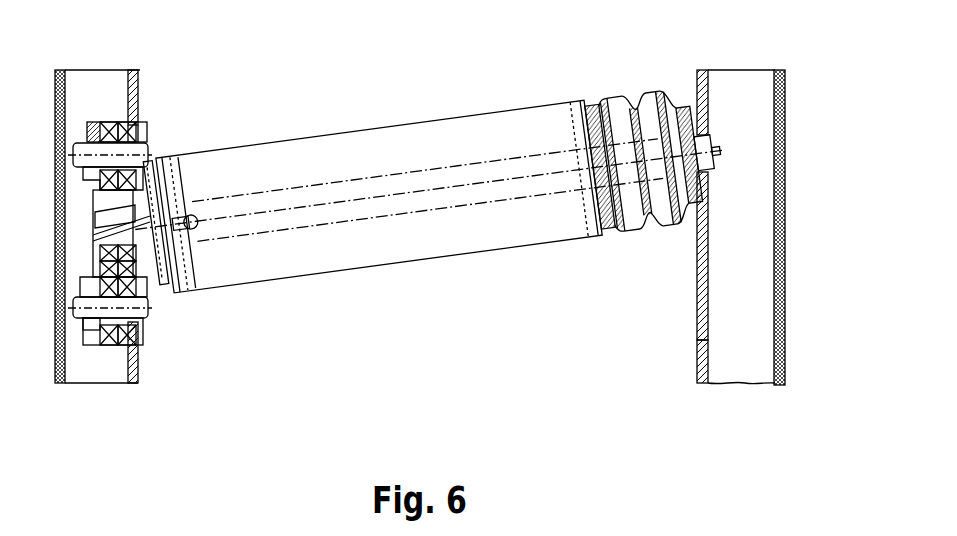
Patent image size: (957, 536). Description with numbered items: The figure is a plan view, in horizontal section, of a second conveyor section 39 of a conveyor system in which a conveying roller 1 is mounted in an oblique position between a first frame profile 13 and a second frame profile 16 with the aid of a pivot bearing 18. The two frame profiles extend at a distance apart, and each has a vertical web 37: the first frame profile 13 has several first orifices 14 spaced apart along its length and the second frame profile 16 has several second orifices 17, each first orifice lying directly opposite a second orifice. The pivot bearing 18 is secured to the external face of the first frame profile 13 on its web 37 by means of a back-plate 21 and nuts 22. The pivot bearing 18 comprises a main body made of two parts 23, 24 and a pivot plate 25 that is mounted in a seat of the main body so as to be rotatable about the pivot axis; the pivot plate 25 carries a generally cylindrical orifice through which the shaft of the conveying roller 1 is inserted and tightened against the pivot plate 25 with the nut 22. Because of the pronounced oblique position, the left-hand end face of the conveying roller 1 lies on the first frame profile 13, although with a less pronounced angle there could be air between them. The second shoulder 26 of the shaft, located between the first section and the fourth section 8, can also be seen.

The conveying roller 1 is at (400, 118).
The fourth section 8 is at (402, 178).
The first frame profile 13 is at (67, 283).
The first orifices 14 is at (133, 90).
The second frame profile 16 is at (767, 98).
The second orifices 17 is at (702, 318).
The pivot bearing 18 is at (110, 112).
The back-plate 21 is at (147, 137).
The nut 22 is at (87, 140).
The main body part 23 is at (125, 333).
The main body part 24 is at (110, 333).
The pivot plate 25 is at (108, 210).
The second shoulder 26 is at (120, 240).
The vertical web 37 is at (133, 363).
The second conveyor section 39 is at (547, 44).